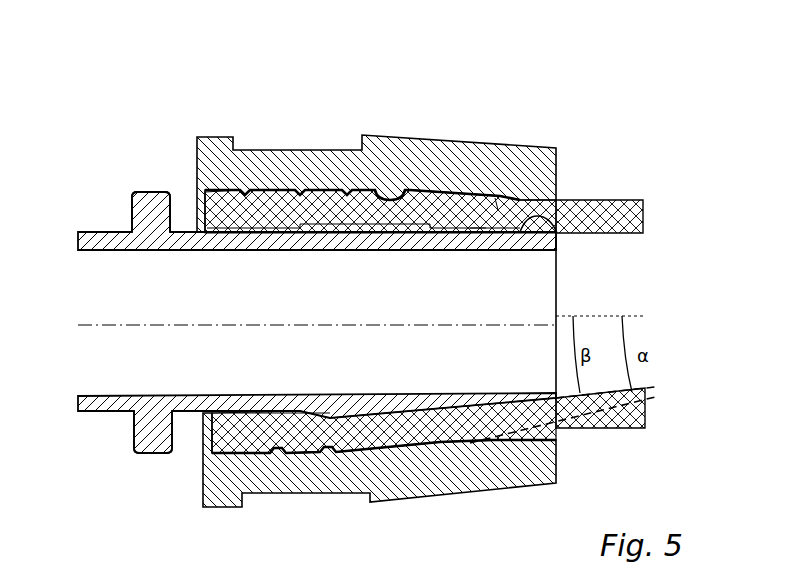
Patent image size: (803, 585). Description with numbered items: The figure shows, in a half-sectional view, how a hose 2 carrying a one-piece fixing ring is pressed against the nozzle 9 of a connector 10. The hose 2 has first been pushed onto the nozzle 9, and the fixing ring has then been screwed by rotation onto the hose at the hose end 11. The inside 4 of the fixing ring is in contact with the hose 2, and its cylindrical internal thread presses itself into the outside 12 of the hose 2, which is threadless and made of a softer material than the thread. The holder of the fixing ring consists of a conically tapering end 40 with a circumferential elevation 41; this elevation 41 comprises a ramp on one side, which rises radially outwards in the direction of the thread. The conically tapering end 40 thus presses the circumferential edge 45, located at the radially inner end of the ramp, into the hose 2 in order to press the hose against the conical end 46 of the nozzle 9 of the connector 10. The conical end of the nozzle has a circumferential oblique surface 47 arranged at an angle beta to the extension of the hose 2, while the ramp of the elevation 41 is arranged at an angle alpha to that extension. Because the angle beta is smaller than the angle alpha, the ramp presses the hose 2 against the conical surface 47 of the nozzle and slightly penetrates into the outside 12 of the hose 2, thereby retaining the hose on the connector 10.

The hose 2 is at (615, 203).
The inside 4 is at (408, 188).
The nozzle 9 is at (380, 236).
The connector 10 is at (113, 214).
The hose end 11 is at (222, 432).
The outside 12 is at (360, 450).
The conically tapering end 40 is at (526, 163).
The circumferential elevation 41 is at (484, 440).
The circumferential edge 45 is at (497, 198).
The conical end 46 is at (478, 230).
The circumferential oblique surface 47 is at (557, 233).